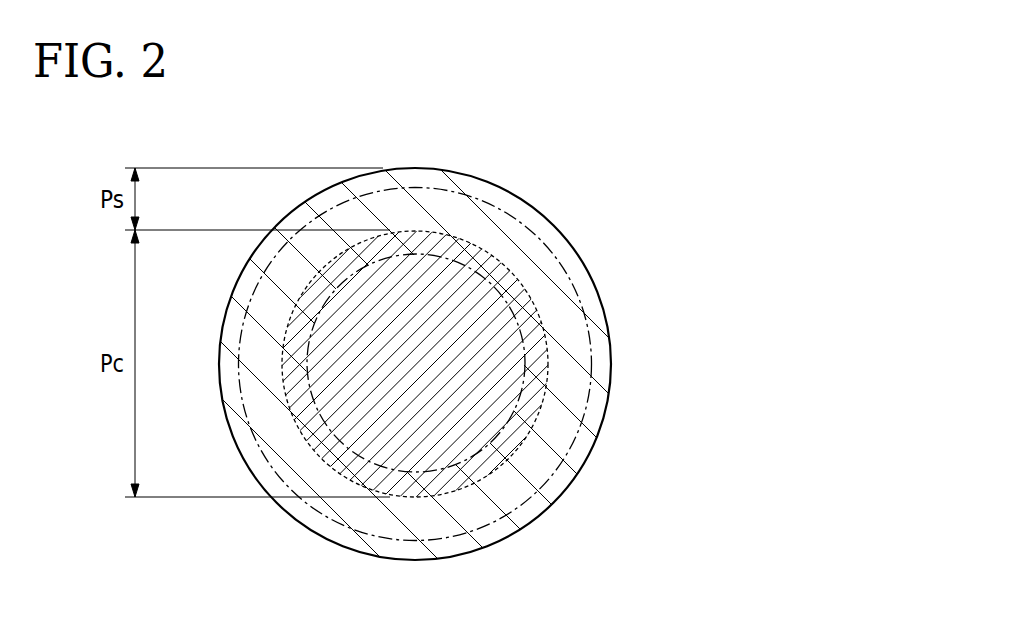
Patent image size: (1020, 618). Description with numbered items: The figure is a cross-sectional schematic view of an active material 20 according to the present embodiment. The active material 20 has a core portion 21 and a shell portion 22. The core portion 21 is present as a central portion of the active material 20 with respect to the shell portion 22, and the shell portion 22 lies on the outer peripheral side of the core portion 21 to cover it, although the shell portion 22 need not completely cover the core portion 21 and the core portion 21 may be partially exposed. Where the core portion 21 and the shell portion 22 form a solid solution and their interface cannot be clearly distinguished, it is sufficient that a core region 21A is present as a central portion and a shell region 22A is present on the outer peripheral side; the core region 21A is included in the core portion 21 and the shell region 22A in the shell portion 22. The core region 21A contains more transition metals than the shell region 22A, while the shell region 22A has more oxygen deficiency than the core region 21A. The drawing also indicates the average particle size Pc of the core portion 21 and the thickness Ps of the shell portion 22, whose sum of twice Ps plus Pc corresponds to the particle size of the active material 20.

The active material 20 is at (415, 314).
The core portion 21 is at (540, 313).
The core region 21A is at (528, 370).
The shell portion 22 is at (538, 225).
The shell region 22A is at (573, 252).